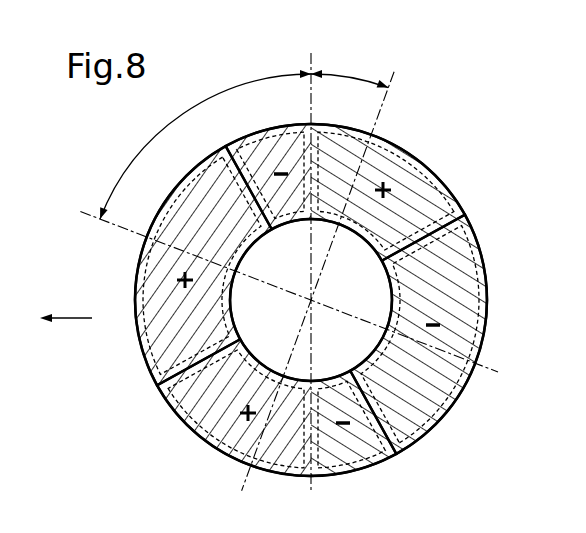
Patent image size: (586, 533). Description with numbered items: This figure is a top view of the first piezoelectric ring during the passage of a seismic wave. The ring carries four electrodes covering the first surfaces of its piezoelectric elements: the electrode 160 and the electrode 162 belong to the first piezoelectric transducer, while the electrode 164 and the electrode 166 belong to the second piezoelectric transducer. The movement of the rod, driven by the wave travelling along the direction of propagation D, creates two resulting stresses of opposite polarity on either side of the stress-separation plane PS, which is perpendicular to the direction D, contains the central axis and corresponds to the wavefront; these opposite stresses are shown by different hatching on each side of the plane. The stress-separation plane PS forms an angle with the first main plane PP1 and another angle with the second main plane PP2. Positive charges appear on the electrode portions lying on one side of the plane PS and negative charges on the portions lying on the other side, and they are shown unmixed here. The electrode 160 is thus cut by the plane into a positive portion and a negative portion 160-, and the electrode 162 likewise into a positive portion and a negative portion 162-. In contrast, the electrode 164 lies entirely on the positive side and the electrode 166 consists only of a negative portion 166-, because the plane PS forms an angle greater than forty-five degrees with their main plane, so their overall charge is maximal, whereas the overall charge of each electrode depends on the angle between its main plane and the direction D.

The electrode 160 is at (506, 128).
The portion with negative charges 160- is at (265, 128).
The electrode 162 is at (207, 448).
The portion with negative charges 162- is at (347, 475).
The electrode 164 is at (137, 283).
The electrode 166 is at (567, 327).
The portion with negative charges 166- is at (483, 273).
The stress-separation plane PS is at (309, 64).
The first main plane PP1 is at (497, 372).
The second main plane PP2 is at (242, 478).
The direction of movement D is at (66, 306).